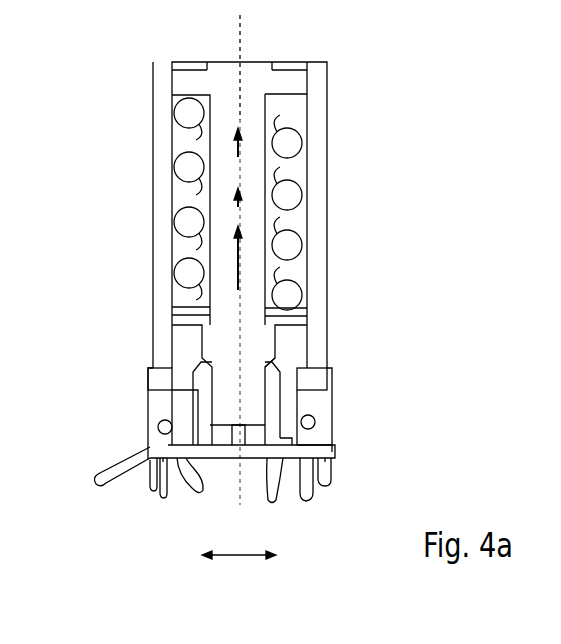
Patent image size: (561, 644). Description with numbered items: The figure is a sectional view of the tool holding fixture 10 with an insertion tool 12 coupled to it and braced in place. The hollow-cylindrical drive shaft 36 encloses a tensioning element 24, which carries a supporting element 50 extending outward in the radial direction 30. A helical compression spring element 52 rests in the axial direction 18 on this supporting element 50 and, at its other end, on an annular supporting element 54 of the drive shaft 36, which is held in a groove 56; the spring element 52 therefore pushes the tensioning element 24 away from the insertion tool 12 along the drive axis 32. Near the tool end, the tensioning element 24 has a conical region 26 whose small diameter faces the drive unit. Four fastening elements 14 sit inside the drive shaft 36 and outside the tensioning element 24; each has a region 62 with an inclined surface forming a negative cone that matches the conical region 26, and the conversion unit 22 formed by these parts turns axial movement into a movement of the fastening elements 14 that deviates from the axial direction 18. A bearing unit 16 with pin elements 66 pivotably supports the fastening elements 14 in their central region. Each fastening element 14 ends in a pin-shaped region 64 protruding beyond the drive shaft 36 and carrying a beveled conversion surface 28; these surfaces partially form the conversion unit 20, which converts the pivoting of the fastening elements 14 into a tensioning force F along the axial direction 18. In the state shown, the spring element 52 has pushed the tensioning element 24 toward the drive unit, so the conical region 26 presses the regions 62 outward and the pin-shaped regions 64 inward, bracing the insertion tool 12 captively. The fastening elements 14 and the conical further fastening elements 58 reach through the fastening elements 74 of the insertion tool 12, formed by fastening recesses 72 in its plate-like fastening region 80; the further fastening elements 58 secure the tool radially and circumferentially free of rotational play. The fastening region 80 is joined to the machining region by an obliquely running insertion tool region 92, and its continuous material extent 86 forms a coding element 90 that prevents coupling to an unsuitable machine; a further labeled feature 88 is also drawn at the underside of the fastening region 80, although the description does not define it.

The tool holding fixture 10 is at (132, 390).
The insertion tool 12 is at (115, 458).
The fastening element 14 is at (332, 400).
The bearing unit 16 is at (328, 422).
The axial direction 18 is at (300, 190).
The conversion unit 20 is at (340, 455).
The conversion unit 22 is at (310, 333).
The tensioning element 24 is at (255, 72).
The conical region 26 is at (305, 318).
The conversion surface 28 is at (303, 458).
The radial direction 30 is at (237, 556).
The drive axis 32 is at (240, 33).
The drive shaft 36 is at (315, 97).
The supporting element 50 is at (288, 82).
The spring element 52 is at (300, 243).
The supporting element 54 is at (158, 318).
The groove 56 is at (173, 308).
The further fastening element 58 is at (193, 462).
The region 62 is at (287, 353).
The pin-shaped region 64 is at (163, 462).
The pin element 66 is at (317, 447).
The fastening recess 72 is at (153, 466).
The fastening element 74 is at (158, 478).
The fastening region 80 is at (150, 457).
The material extent 86 is at (240, 463).
The coding element 90 is at (275, 480).
The edge 88 is at (327, 455).
The insertion tool region 92 is at (93, 477).
The tensioning force F is at (240, 262).